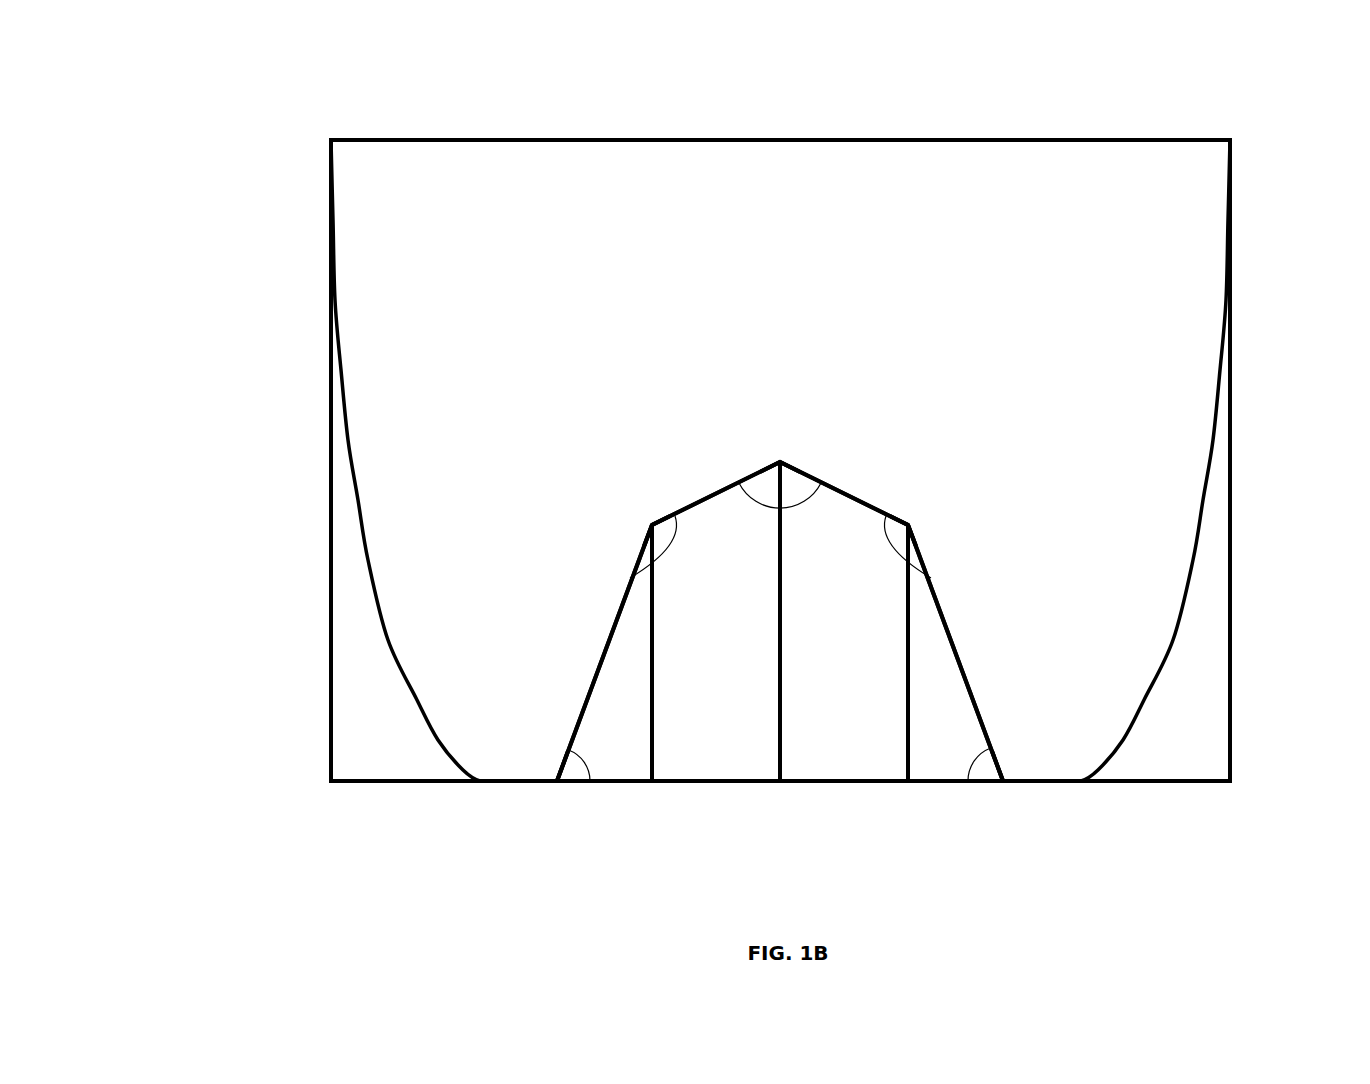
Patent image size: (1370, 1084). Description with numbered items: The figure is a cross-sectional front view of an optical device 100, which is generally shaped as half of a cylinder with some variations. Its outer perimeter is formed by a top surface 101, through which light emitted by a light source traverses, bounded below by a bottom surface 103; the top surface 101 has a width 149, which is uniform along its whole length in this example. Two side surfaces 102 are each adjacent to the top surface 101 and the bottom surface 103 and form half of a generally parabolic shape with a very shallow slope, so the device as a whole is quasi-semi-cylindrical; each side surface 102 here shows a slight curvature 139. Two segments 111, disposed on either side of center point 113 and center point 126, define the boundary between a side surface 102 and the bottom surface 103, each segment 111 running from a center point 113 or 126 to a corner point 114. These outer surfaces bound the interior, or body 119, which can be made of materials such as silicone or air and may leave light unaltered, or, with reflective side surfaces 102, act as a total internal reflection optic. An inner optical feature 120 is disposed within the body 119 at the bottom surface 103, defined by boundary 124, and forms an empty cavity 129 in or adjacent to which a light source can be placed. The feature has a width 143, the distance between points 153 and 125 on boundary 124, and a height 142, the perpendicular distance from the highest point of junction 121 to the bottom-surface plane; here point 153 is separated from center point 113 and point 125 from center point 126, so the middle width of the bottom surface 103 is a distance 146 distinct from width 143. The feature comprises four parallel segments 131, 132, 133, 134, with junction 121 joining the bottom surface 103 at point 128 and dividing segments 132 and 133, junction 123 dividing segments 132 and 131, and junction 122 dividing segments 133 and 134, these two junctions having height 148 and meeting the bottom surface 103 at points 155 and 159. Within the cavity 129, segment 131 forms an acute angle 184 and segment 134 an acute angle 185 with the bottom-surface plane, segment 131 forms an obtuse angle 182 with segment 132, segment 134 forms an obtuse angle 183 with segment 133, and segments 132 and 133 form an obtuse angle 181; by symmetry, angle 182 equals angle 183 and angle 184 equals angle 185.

The optical device 100 is at (692, 410).
The top surface 101 is at (821, 116).
The side surface 102 is at (1259, 460).
The bottom surface 103 is at (484, 811).
The segment 111 is at (1196, 805).
The center point 113 is at (1114, 805).
The corner point 114 is at (349, 484).
The interior (body) 119 is at (922, 263).
The inner optical feature 120 is at (806, 574).
The junction (center junction) 121 is at (724, 428).
The junction 122 is at (965, 498).
The junction 123 is at (595, 498).
The boundary 124 is at (683, 804).
The point 125 is at (504, 758).
The center point 126 is at (433, 799).
The point 128 is at (731, 652).
The cavity 129 is at (558, 699).
The segment 131 is at (561, 653).
The segment 132 is at (680, 472).
The segment 133 is at (856, 459).
The segment 134 is at (998, 653).
The curvature 139 is at (1215, 460).
The height 142 is at (251, 463).
The width 143 is at (557, 862).
The distance 146 is at (490, 895).
The height 148 is at (283, 780).
The width 149 is at (1228, 92).
The point 153 is at (954, 797).
The point 155 is at (662, 759).
The point 159 is at (859, 684).
The angle 181 is at (751, 510).
The angle 182 is at (701, 555).
The angle 183 is at (859, 556).
The angle 184 is at (653, 729).
The angle 185 is at (906, 731).